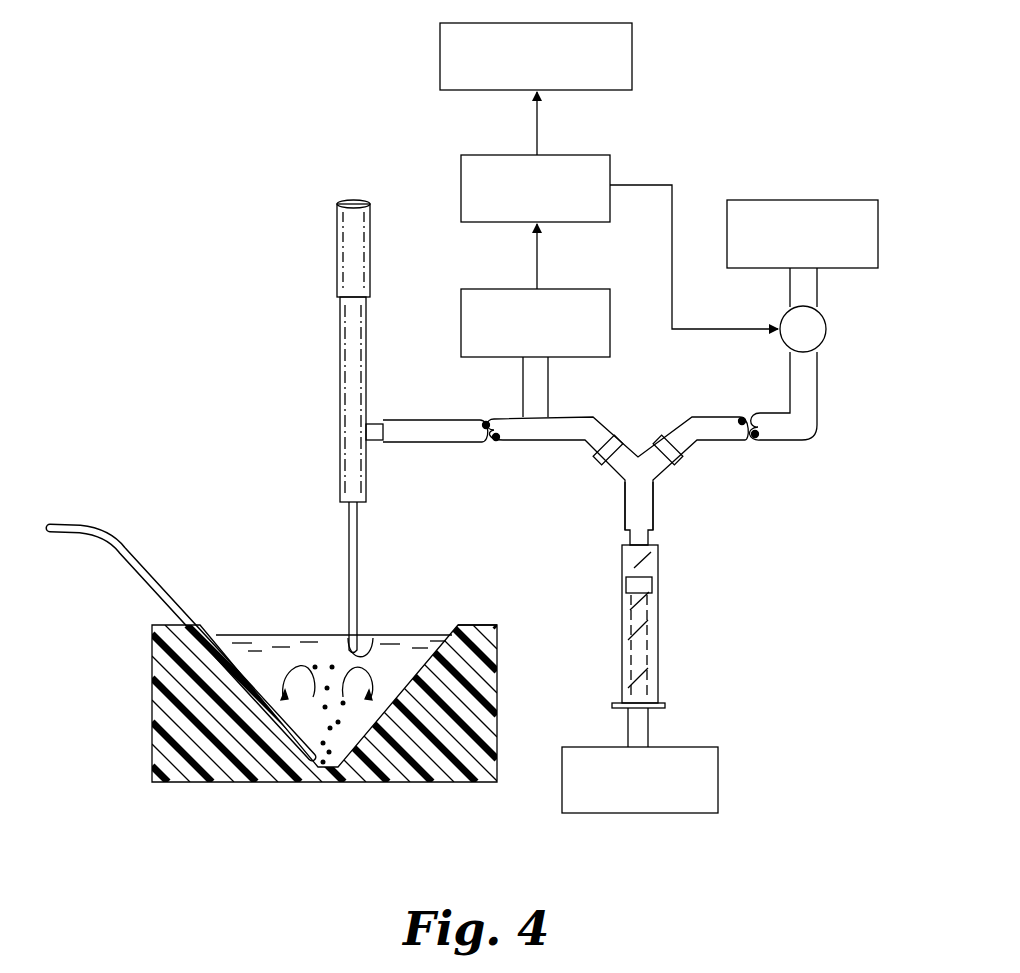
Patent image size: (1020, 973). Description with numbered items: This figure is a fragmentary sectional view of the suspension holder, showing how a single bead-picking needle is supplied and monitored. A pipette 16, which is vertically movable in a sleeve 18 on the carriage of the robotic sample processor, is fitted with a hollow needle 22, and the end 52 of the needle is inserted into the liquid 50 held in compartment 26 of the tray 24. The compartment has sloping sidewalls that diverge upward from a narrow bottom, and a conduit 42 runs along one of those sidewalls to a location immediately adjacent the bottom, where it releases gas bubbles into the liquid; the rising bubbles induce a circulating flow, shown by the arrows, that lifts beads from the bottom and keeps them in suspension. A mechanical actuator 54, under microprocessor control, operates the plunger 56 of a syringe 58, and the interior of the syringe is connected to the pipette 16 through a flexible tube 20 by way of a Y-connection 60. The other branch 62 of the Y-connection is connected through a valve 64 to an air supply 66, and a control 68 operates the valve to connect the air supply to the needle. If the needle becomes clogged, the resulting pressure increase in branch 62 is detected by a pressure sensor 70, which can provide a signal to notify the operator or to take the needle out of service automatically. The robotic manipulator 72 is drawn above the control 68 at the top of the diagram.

The robotic manipulator 72 is at (632, 35).
The control 68 is at (610, 162).
The pressure sensor 70 is at (598, 357).
The air supply 66 is at (787, 200).
The valve 64 is at (826, 330).
The other branch of the Y-connection 62 is at (665, 462).
The Y-connection 60 is at (640, 490).
The flexible tube 20 is at (532, 438).
The sleeve 18 is at (372, 264).
The pipette 16 is at (364, 376).
The hollow needle 22 is at (358, 550).
The end of needle 52 is at (372, 640).
The conduit 42 is at (160, 577).
The tray 24 is at (151, 715).
The compartment 26 is at (458, 627).
The liquid 50 is at (323, 640).
The syringe 58 is at (658, 608).
The plunger 56 is at (650, 727).
The mechanical actuator 54 is at (676, 813).